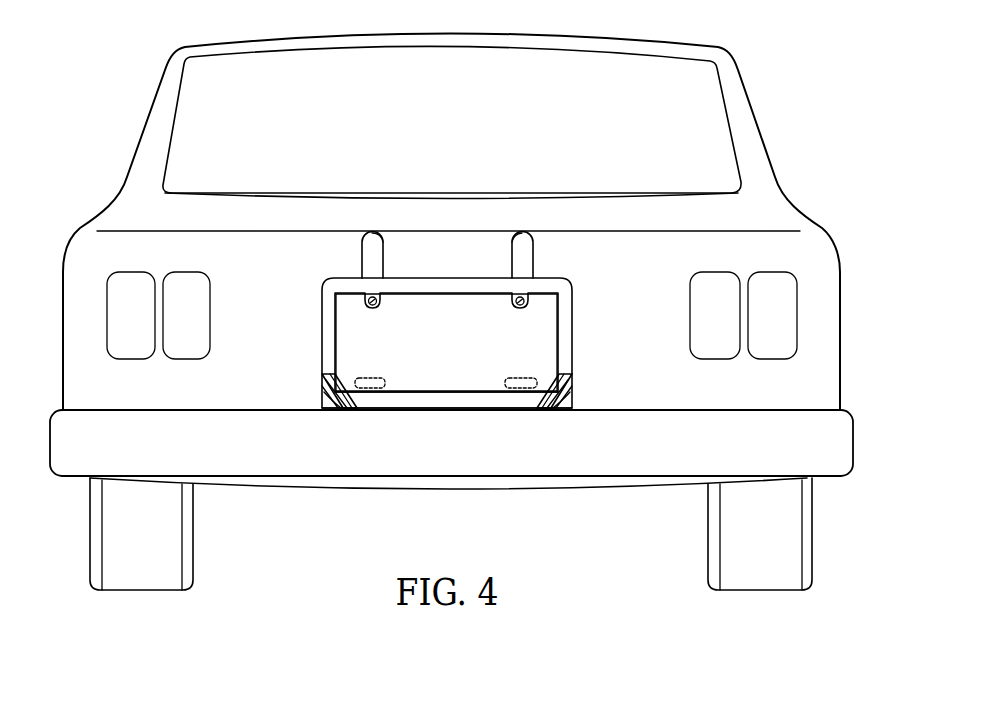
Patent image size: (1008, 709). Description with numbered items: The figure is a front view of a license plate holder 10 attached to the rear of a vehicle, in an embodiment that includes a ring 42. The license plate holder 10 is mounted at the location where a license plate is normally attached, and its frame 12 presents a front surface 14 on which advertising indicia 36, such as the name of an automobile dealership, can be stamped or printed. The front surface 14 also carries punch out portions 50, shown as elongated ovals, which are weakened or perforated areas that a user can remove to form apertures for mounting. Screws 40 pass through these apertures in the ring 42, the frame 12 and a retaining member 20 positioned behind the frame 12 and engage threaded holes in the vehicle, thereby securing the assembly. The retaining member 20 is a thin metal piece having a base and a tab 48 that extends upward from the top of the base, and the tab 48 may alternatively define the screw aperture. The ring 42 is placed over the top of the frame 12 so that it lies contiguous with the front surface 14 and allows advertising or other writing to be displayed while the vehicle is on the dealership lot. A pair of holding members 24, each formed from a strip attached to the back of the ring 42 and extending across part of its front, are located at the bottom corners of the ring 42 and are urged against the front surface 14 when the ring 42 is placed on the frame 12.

The license plate holder 10 is at (589, 285).
The frame 12 is at (343, 327).
The front surface 14 is at (545, 364).
The retaining member 20 is at (364, 266).
The holding members 24 is at (330, 375).
The advertising indicia 36 is at (408, 353).
The screws 40 is at (367, 300).
The ring 42 is at (512, 400).
The tab 48 is at (508, 248).
The punch out portions 50 is at (372, 389).